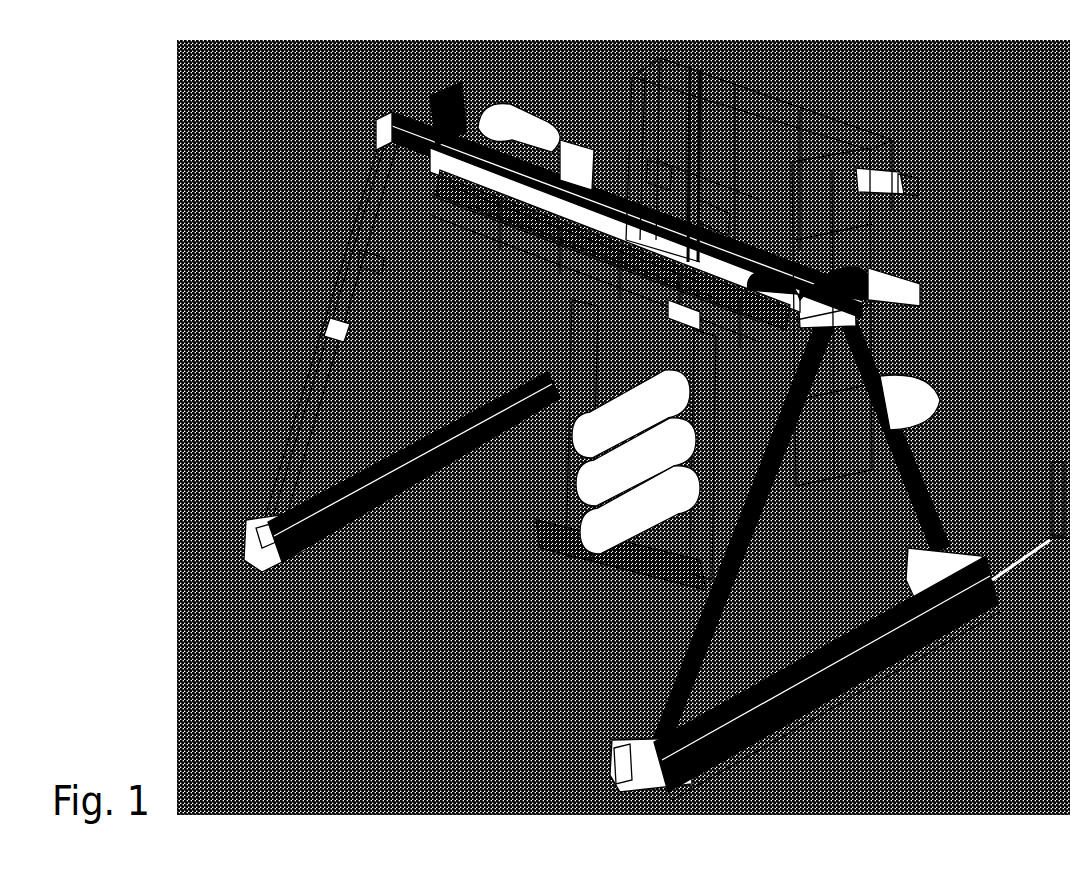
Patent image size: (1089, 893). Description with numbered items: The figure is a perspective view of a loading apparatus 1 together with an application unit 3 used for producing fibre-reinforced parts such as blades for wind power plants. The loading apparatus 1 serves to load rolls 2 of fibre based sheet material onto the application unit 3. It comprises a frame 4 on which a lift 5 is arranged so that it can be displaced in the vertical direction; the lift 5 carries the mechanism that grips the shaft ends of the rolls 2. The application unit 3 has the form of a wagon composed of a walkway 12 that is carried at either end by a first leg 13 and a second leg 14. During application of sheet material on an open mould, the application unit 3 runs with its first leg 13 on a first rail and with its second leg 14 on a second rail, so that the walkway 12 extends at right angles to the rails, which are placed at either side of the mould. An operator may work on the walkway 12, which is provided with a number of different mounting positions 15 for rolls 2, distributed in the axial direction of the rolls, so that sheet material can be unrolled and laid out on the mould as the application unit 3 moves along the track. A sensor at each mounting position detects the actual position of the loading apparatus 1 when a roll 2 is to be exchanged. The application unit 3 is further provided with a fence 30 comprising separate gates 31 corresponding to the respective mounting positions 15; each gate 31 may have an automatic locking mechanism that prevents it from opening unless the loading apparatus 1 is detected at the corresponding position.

The loading apparatus 1 is at (629, 402).
The rolls 2 is at (632, 512).
The application unit 3 is at (629, 466).
The frame 4 is at (872, 226).
The lift 5 is at (668, 62).
The walkway 12 is at (546, 288).
The first leg 13 is at (316, 383).
The second leg 14 is at (660, 690).
The mounting positions 15 is at (508, 126).
The fence 30 is at (714, 210).
The gates 31 is at (660, 172).